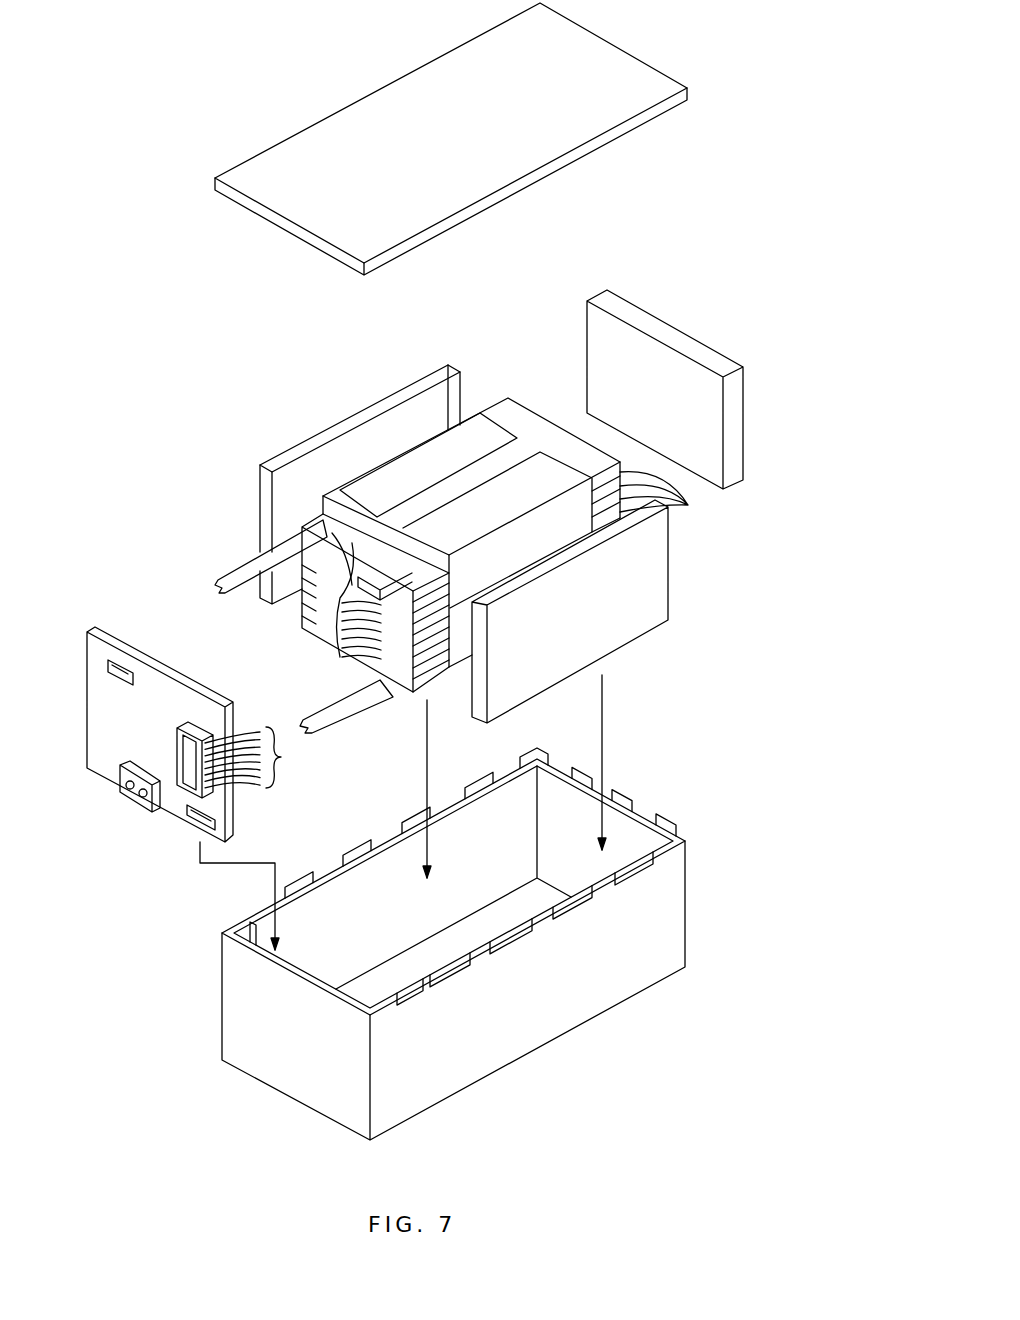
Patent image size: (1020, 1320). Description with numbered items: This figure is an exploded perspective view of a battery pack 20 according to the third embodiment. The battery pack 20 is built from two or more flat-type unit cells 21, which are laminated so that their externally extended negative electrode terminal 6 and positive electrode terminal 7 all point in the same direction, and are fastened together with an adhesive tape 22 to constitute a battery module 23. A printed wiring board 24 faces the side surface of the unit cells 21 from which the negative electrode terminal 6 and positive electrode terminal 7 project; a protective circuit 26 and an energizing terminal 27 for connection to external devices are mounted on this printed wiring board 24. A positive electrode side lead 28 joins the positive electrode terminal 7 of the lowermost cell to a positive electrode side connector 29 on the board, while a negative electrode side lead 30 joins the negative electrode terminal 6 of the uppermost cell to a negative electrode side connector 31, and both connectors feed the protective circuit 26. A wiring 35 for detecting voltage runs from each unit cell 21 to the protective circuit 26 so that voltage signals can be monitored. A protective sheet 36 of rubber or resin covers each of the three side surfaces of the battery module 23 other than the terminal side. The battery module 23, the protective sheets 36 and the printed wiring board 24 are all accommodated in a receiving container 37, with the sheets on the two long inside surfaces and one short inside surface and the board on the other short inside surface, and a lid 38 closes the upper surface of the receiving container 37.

The battery pack 20 is at (118, 167).
The unit cell 21 is at (688, 505).
The adhesive tape 22 is at (533, 480).
The battery module 23 is at (403, 458).
The printed wiring board 24 is at (120, 630).
The protective circuit 26 is at (192, 720).
The energizing terminal 27 is at (142, 803).
The positive electrode side lead 28 is at (352, 713).
The positive electrode side connector 29 is at (225, 820).
The negative electrode side lead 30 is at (225, 573).
The negative electrode side connector 31 is at (130, 668).
The wiring for detecting voltage 35 is at (323, 628).
The protective sheet 36 is at (323, 440).
The receiving container 37 is at (674, 912).
The lid 38 is at (630, 75).
The negative electrode terminal 6 is at (313, 527).
The positive electrode terminal 7 is at (397, 558).